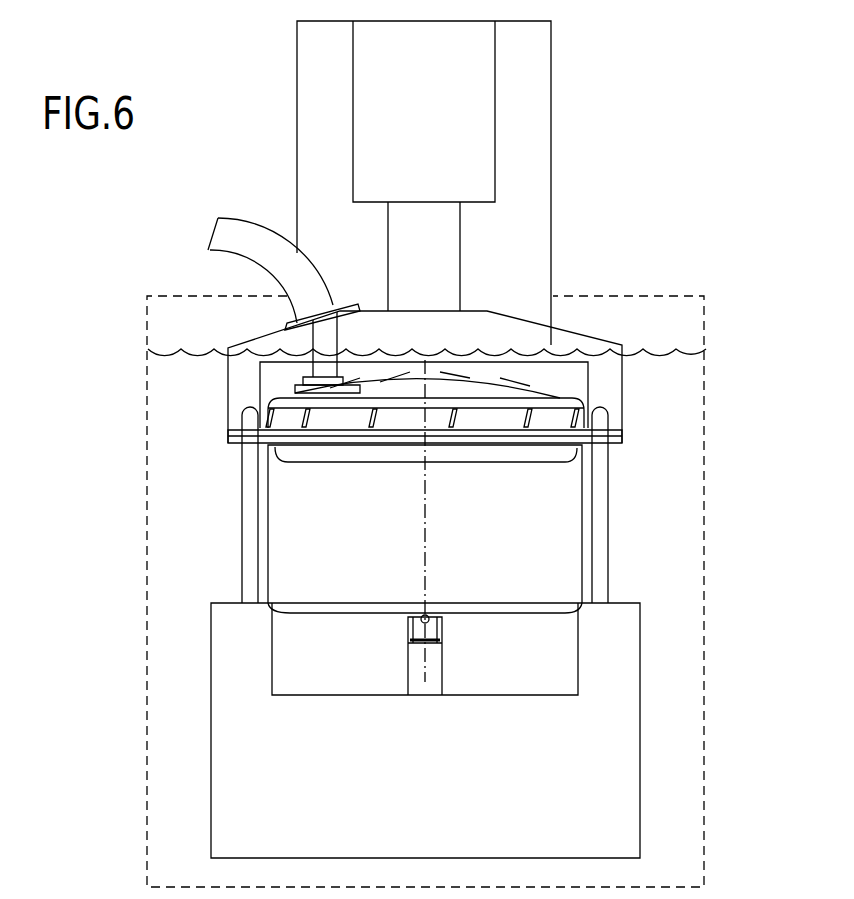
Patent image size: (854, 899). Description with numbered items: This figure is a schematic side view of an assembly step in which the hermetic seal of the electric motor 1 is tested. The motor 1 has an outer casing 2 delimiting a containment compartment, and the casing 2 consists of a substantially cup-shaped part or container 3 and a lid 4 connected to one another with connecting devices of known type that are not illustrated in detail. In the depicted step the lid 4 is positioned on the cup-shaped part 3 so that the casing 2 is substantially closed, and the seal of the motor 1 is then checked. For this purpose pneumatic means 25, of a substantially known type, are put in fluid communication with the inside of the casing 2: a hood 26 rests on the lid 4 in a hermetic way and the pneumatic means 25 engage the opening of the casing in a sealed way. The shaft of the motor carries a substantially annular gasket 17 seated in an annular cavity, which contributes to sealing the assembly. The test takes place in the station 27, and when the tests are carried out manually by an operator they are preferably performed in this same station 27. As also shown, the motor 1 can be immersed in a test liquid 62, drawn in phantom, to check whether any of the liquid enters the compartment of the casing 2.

The electric motor 1 is at (263, 538).
The outer casing 2 is at (578, 520).
The cup-shaped part 3 is at (555, 563).
The lid 4 is at (547, 403).
The annular gasket 17 is at (403, 635).
The pneumatic means 25 is at (226, 239).
The hood 26 is at (603, 336).
The station 27 is at (578, 70).
The test liquid 62 is at (173, 404).